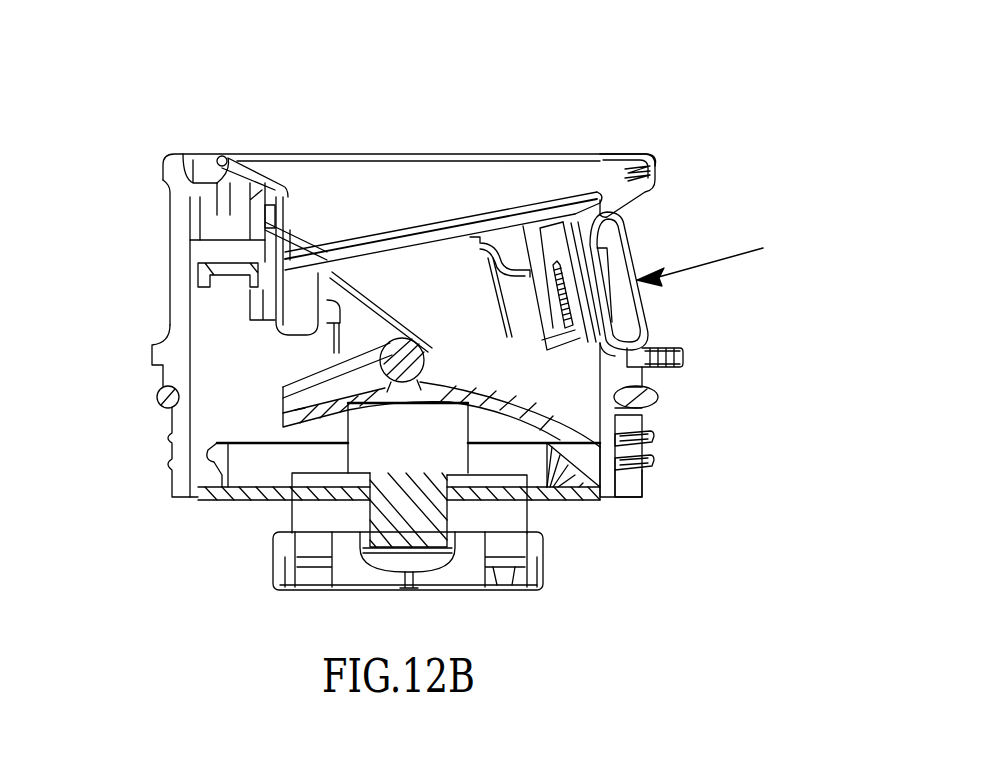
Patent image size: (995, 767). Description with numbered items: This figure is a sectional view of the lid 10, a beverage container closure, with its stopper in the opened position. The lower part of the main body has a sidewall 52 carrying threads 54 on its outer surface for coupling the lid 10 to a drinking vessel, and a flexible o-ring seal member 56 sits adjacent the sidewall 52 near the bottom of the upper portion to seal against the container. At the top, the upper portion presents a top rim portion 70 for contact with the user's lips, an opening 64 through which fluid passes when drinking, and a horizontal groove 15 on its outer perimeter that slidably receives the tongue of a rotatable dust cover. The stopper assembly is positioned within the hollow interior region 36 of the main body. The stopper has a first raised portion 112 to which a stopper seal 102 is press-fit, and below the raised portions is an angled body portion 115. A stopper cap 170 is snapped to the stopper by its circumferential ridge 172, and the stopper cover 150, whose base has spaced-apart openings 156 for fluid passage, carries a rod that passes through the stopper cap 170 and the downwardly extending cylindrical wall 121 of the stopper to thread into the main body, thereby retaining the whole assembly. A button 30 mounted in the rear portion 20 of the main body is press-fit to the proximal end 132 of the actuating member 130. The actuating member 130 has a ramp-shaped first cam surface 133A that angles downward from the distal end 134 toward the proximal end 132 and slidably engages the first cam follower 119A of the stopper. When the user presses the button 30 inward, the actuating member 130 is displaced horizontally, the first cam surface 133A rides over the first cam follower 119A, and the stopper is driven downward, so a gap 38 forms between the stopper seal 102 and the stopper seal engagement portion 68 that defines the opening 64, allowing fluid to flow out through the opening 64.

The lid 10 is at (654, 98).
The groove 15 is at (660, 182).
The rear portion 20 is at (578, 250).
The button 30 is at (622, 247).
The hollow interior region 36 is at (642, 378).
The gap 38 is at (225, 240).
The sidewall 52 is at (633, 483).
The threads 54 is at (652, 466).
The o-ring seal member 56 is at (650, 397).
The opening 64 is at (223, 160).
The stopper seal engagement portion 68 is at (200, 195).
The top rim portion 70 is at (655, 157).
The stopper seal 102 is at (230, 268).
The first raised portion 112 is at (232, 300).
The body portion 115 is at (622, 332).
The first cam follower 119A is at (385, 338).
The downwardly extending cylindrical wall 121 is at (360, 430).
The actuating member 130 is at (431, 294).
The proximal end 132 is at (555, 272).
The first cam surface 133A is at (428, 330).
The distal end 134 is at (333, 272).
The stopper cover 150 is at (527, 545).
The openings 156 is at (497, 570).
The stopper cap 170 is at (245, 502).
The ridge 172 is at (215, 447).